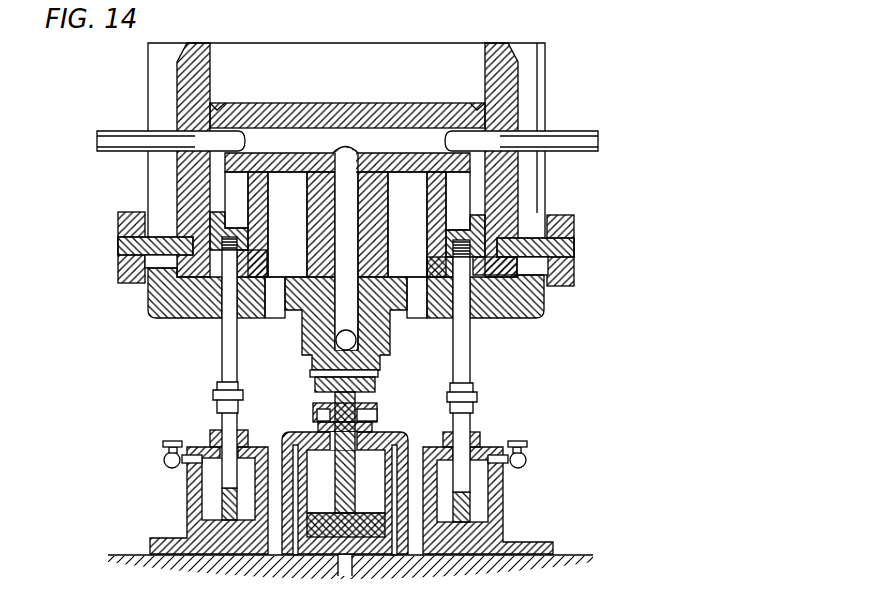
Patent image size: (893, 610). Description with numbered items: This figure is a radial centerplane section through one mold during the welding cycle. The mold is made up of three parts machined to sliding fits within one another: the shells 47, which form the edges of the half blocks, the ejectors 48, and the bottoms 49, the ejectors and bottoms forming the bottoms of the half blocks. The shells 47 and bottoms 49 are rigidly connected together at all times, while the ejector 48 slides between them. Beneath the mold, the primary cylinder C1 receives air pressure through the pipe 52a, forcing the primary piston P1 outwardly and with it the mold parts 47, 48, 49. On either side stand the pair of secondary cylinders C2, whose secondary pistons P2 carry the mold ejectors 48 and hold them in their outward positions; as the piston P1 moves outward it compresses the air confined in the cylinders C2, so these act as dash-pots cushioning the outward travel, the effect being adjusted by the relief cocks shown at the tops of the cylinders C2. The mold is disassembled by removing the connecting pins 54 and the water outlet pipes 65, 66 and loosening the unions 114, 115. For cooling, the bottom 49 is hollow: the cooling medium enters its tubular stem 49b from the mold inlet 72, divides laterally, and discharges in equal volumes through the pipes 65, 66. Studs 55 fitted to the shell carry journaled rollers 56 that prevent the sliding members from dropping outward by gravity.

The shell 47 is at (200, 66).
The ejector 48 is at (224, 104).
The bottom 49 is at (347, 103).
The tubular stem 49b is at (377, 210).
The water outlet pipe 66 is at (130, 144).
The water outlet pipe 65 is at (573, 157).
The stud 55 is at (162, 236).
The roller 56 is at (118, 224).
The mold inlet 72 is at (346, 340).
The connecting pin 54 is at (313, 377).
The union 114 is at (212, 393).
The union 115 is at (477, 398).
The primary cylinder C1 is at (378, 433).
The secondary cylinder C2 is at (210, 442).
The primary piston P1 is at (330, 508).
The secondary piston P2 is at (222, 518).
The pipe 52a is at (344, 575).